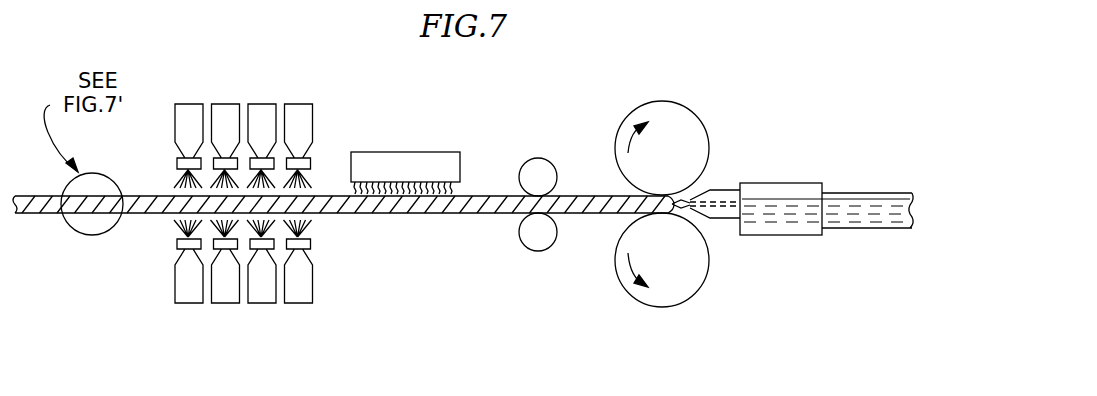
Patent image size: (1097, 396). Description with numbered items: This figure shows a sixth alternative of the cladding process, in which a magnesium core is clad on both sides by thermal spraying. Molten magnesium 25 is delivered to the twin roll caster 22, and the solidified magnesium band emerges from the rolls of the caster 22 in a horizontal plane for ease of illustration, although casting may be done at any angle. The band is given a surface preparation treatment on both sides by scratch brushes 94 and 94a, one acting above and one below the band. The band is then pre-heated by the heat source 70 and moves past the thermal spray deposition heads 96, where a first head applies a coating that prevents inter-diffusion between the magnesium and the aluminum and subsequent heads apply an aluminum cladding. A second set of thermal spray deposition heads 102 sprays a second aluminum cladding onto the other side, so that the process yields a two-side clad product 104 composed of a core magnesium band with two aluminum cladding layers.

The two-side clad product 104 is at (87, 213).
The second set of thermal spray deposition heads 102 is at (272, 93).
The thermal spray deposition heads 96 is at (250, 312).
The heat source 70 is at (407, 152).
The scratch brush 94a is at (523, 160).
The scratch brush 94 is at (550, 250).
The twin roll caster 22 is at (718, 228).
The molten magnesium 25 is at (838, 198).